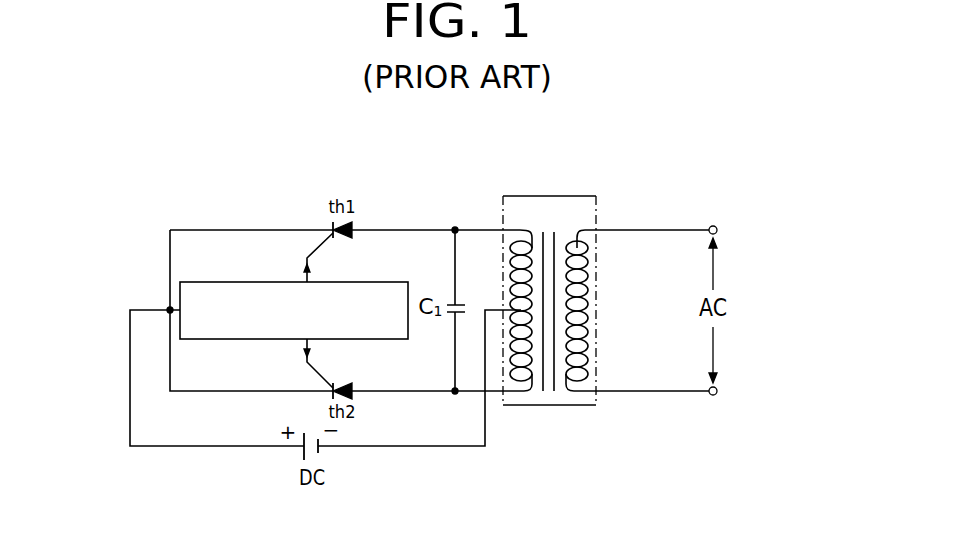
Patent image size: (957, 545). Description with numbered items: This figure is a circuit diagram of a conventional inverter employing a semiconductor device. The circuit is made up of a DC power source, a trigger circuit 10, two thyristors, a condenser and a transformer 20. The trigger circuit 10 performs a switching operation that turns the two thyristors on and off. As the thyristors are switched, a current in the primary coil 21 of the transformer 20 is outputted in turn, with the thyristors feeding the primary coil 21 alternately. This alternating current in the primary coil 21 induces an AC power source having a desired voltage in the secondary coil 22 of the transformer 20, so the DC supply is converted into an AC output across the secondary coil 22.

The trigger circuit 10 is at (262, 282).
The transformer 20 is at (583, 292).
The primary coil 21 is at (536, 378).
The secondary coil 22 is at (582, 255).